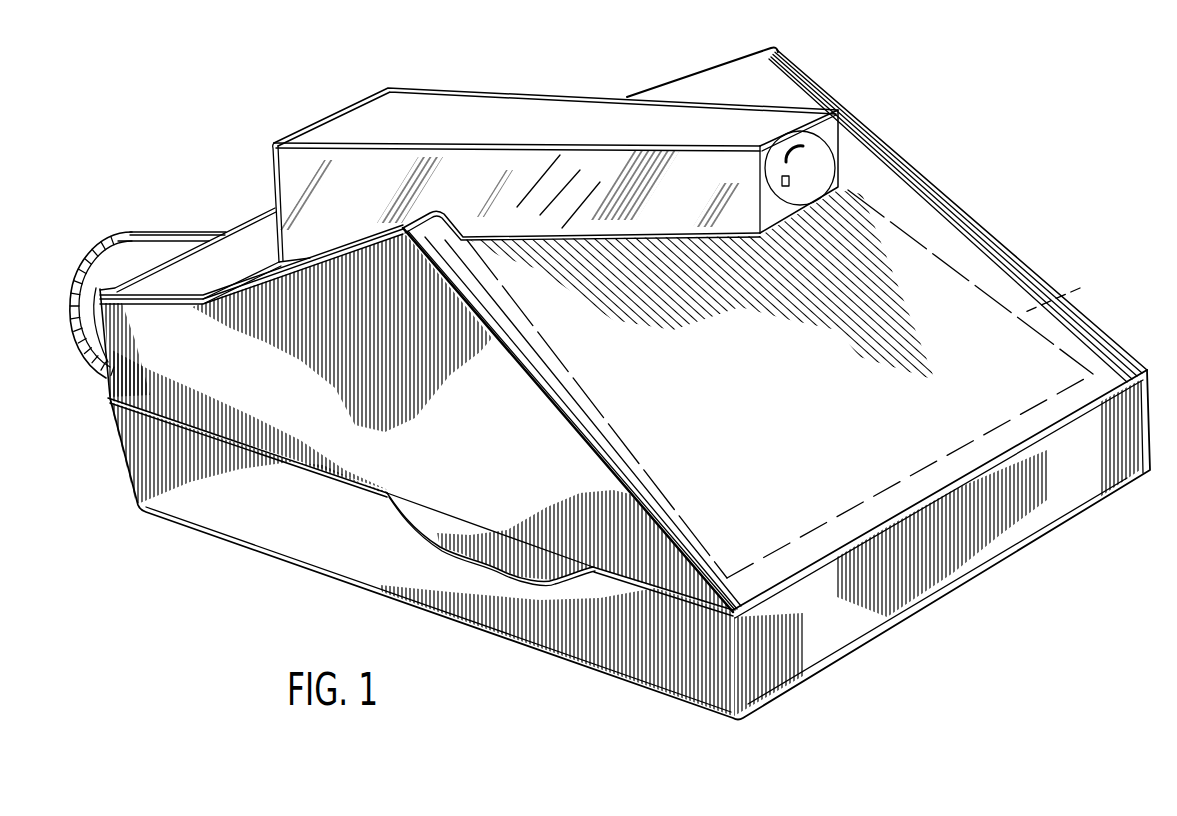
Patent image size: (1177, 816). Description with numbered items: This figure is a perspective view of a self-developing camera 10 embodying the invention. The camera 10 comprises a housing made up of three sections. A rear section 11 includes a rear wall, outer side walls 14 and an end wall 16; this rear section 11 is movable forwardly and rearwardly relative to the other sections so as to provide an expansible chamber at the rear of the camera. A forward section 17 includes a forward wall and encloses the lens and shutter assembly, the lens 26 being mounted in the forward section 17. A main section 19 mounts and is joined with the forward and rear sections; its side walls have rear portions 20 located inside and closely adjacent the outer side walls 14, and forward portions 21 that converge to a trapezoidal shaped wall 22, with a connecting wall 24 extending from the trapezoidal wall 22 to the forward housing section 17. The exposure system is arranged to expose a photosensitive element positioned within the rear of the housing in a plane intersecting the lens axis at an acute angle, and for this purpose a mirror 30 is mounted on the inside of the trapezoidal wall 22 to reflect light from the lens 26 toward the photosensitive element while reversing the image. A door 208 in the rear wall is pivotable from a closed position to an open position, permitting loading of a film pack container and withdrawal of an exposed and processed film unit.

The camera 10 is at (932, 166).
The rear section 11 is at (210, 537).
The outer side walls 14 is at (302, 557).
The end wall 16 is at (1053, 495).
The forward section 17 is at (240, 236).
The main section 19 is at (1035, 207).
The rear portions 20 is at (448, 520).
The forward portions 21 is at (353, 465).
The trapezoidal shaped wall 22 is at (1024, 274).
The connecting wall 24 is at (321, 257).
The lens 26 is at (170, 232).
The mirror 30 is at (1063, 287).
The door 208 is at (820, 655).